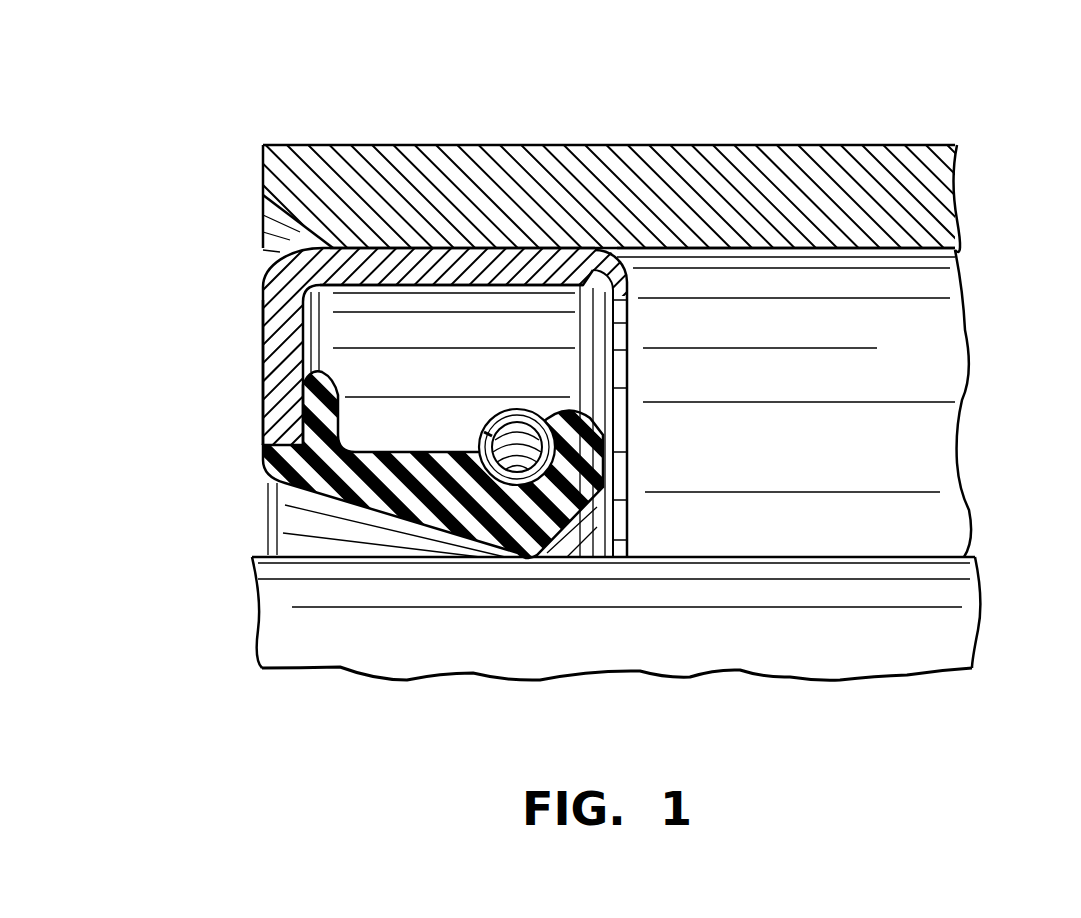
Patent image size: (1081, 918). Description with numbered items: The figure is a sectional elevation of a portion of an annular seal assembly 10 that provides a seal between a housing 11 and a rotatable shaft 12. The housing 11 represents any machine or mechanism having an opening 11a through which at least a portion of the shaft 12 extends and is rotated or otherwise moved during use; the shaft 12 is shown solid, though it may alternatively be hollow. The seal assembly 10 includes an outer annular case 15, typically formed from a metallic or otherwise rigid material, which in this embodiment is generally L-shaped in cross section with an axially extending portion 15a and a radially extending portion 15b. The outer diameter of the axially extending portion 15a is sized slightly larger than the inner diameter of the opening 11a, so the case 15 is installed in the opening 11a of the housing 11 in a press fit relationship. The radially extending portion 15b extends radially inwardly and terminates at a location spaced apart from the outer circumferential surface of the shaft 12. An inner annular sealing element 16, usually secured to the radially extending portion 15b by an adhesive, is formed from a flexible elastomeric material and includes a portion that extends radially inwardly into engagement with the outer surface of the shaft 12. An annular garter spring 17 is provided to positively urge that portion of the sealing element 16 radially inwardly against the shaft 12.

The annular seal assembly 10 is at (715, 375).
The housing 11 is at (702, 160).
The opening 11a is at (893, 252).
The rotatable shaft 12 is at (840, 653).
The outer annular case 15 is at (283, 286).
The axially extending portion 15a is at (465, 285).
The radially extending portion 15b is at (272, 396).
The inner annular sealing element 16 is at (310, 483).
The annular garter spring 17 is at (530, 417).